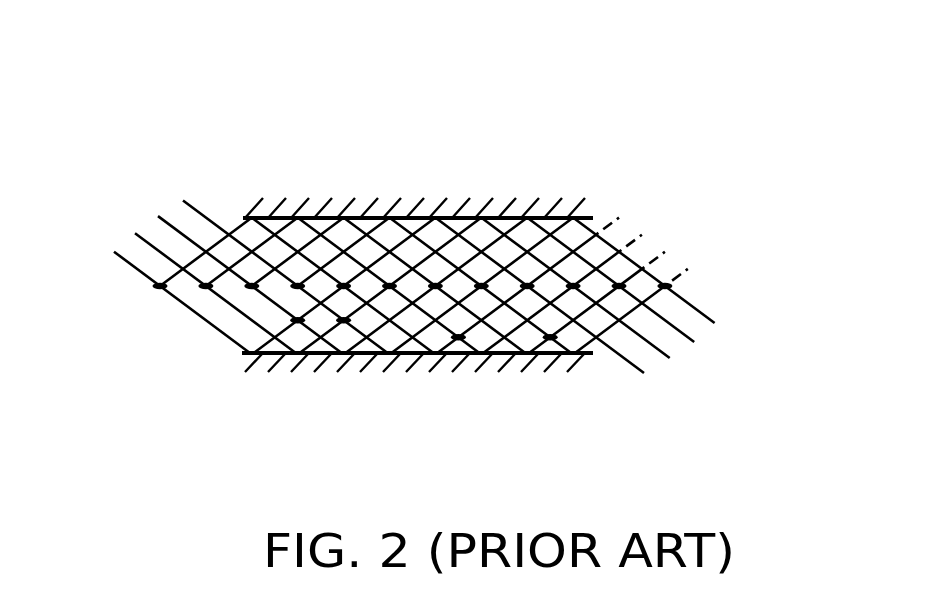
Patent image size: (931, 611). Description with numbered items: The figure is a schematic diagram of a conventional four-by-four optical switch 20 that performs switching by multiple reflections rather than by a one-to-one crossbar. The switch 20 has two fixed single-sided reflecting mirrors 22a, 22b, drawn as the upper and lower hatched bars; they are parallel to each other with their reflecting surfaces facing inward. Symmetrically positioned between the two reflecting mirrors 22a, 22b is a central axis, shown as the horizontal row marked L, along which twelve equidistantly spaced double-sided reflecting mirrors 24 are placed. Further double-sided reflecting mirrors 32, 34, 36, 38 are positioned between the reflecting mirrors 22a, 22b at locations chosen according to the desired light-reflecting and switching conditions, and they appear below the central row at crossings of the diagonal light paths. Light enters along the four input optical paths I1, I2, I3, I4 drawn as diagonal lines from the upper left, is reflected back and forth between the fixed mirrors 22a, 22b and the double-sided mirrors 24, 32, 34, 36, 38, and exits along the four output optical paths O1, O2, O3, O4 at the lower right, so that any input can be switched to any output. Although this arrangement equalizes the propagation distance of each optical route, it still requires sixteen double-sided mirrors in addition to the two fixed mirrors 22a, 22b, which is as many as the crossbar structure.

The optical switch 20 is at (806, 85).
The single-sided reflecting mirror 22a is at (550, 218).
The single-sided reflecting mirror 22b is at (257, 355).
The double-sided reflecting mirrors 24 is at (712, 236).
The input optical path I1 is at (280, 260).
The input optical path I2 is at (239, 267).
The input optical path I3 is at (198, 281).
The input optical path I4 is at (163, 296).
The output optical path O1 is at (662, 284).
The output optical path O2 is at (626, 295).
The output optical path O3 is at (588, 305).
The output optical path O4 is at (552, 314).
The line of switching nodes L is at (686, 290).
The double-sided reflecting mirror 32 is at (297, 322).
The double-sided reflecting mirror 34 is at (343, 322).
The double-sided reflecting mirror 36 is at (458, 338).
The double-sided reflecting mirror 38 is at (550, 338).